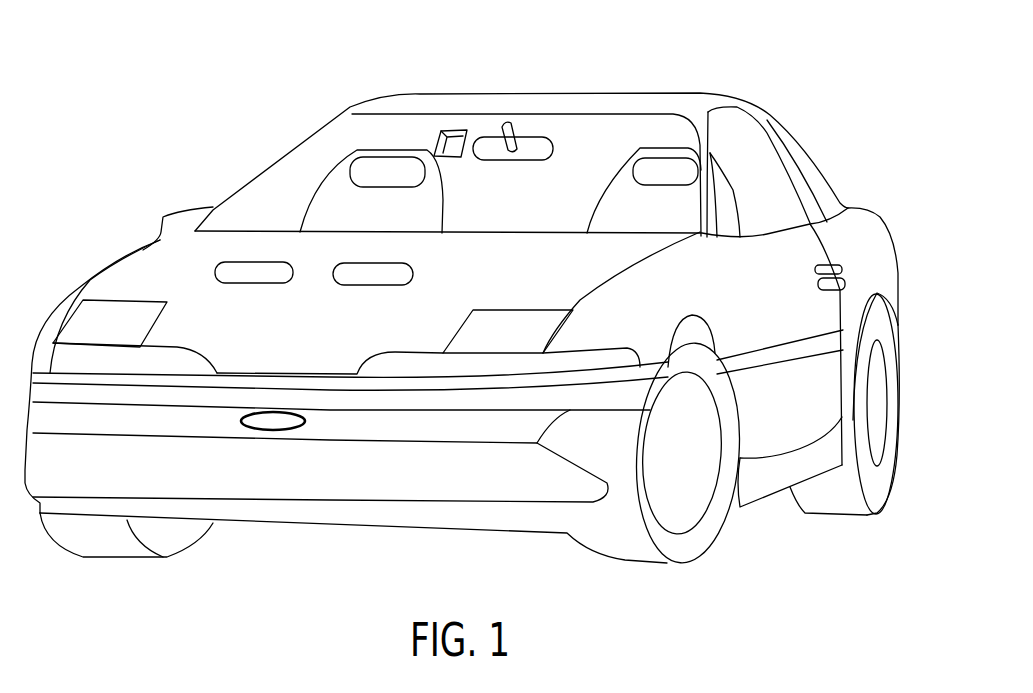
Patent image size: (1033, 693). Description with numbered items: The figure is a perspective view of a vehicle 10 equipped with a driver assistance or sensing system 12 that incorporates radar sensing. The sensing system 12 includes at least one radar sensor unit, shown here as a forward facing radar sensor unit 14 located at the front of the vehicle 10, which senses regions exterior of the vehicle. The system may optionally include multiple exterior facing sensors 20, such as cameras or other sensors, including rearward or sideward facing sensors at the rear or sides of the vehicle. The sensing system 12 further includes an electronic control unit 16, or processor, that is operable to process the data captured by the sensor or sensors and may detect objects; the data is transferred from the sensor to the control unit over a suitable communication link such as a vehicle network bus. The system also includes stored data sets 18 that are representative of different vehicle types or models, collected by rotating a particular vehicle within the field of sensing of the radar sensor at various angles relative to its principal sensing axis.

The vehicle 10 is at (364, 76).
The sensing system 12 is at (265, 393).
The forward facing radar sensor unit 14 is at (281, 421).
The electronic control unit 16 is at (241, 270).
The stored data sets 18 is at (358, 280).
The exterior facing sensors 20 is at (430, 120).